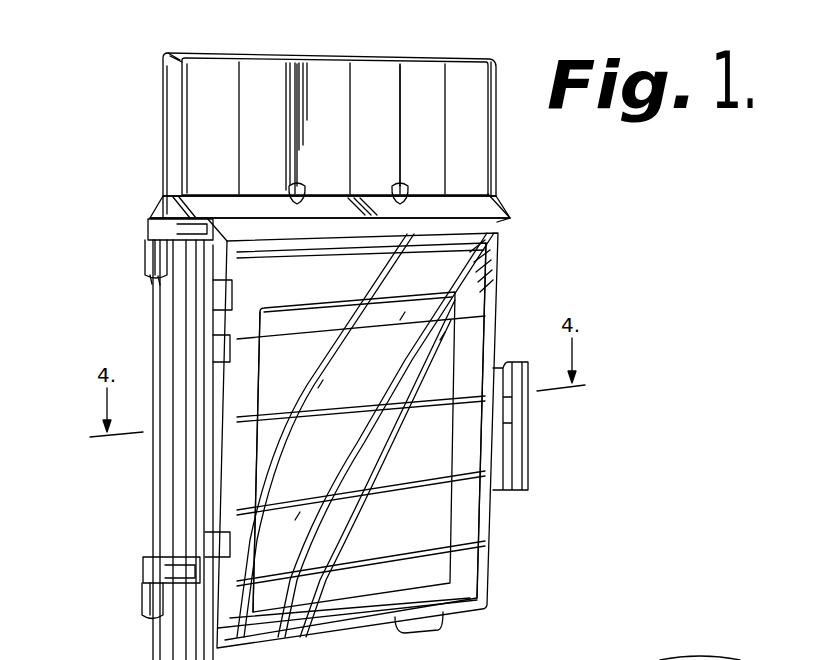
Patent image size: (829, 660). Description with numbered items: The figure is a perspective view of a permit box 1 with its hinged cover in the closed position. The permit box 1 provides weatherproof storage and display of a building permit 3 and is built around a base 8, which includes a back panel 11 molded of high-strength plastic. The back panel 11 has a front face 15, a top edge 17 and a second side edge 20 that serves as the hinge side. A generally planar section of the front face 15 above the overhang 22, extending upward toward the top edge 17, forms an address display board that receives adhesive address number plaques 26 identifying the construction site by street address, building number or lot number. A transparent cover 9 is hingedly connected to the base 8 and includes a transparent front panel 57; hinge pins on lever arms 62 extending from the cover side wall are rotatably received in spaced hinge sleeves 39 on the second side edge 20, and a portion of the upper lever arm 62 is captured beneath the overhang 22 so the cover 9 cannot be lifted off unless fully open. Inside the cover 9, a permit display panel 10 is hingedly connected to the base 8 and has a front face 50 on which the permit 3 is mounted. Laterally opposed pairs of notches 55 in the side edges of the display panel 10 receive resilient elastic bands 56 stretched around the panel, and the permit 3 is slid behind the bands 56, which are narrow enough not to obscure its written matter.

The permit box 1 is at (629, 333).
The building permit 3 is at (450, 527).
The base 8 is at (160, 99).
The transparent cover 9 is at (500, 268).
The permit display panel 10 is at (470, 347).
The back panel 11 is at (496, 168).
The front face 15 is at (650, 659).
The top edge 17 is at (527, 658).
The second side edge 20 is at (170, 132).
The overhang 22 is at (500, 200).
The address number plaques 26 is at (376, 60).
The hinge sleeves 39 is at (145, 254).
The front face 50 is at (294, 283).
The notches 55 is at (490, 312).
The elastic band 56 is at (318, 327).
The transparent front panel 57 is at (291, 533).
The lever arms 62 is at (150, 222).